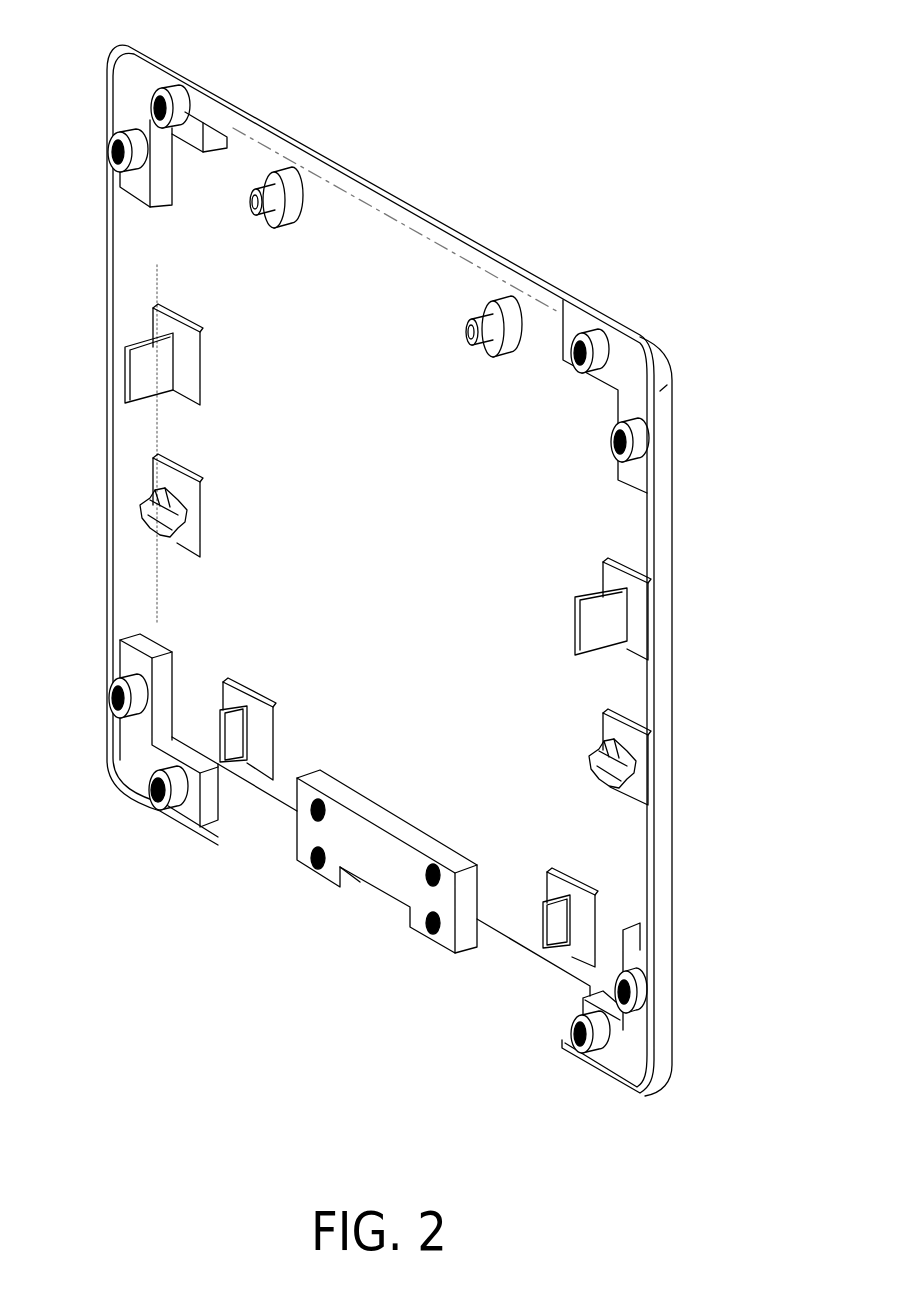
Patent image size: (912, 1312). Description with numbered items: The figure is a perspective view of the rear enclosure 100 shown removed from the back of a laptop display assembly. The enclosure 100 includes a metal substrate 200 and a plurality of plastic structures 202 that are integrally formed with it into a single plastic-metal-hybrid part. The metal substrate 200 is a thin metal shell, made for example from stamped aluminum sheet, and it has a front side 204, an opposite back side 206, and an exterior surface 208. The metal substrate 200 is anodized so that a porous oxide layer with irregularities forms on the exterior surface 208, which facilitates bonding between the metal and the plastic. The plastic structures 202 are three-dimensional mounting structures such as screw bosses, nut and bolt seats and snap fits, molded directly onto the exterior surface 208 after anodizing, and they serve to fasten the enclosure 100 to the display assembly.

The rear enclosure 100 is at (598, 114).
The metal substrate 200 is at (107, 578).
The plastic structures 202 is at (173, 155).
The front side 204 is at (455, 1019).
The back side 206 is at (751, 958).
The exterior surface 208 is at (418, 688).